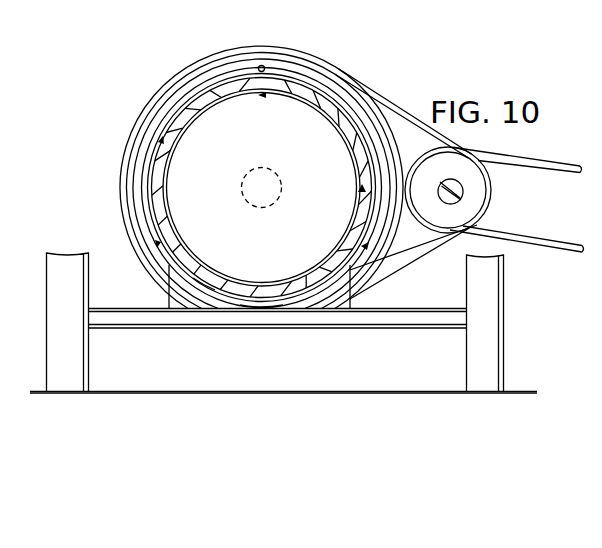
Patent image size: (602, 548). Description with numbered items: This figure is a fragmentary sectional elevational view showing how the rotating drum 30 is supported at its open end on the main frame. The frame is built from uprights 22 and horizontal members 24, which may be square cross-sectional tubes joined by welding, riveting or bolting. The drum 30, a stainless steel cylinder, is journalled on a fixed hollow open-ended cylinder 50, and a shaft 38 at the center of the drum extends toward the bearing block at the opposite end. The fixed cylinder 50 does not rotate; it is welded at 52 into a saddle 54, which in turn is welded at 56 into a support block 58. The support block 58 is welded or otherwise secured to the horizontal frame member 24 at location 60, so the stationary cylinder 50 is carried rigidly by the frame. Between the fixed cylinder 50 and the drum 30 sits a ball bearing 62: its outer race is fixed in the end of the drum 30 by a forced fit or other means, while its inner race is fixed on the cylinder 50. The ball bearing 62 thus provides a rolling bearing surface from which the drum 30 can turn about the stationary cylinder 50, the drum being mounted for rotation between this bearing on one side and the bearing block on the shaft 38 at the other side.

The uprights 22 is at (53, 362).
The horizontal members 24 is at (397, 320).
The rotating drum 30 is at (155, 94).
The shaft 38 is at (247, 203).
The fixed hollow open-ended cylinder 50 is at (152, 150).
The weld 52 is at (160, 243).
The saddle 54 is at (204, 291).
The weld 56 is at (160, 286).
The support block 58 is at (335, 298).
The location 60 is at (262, 310).
The ball bearing 62 is at (205, 79).